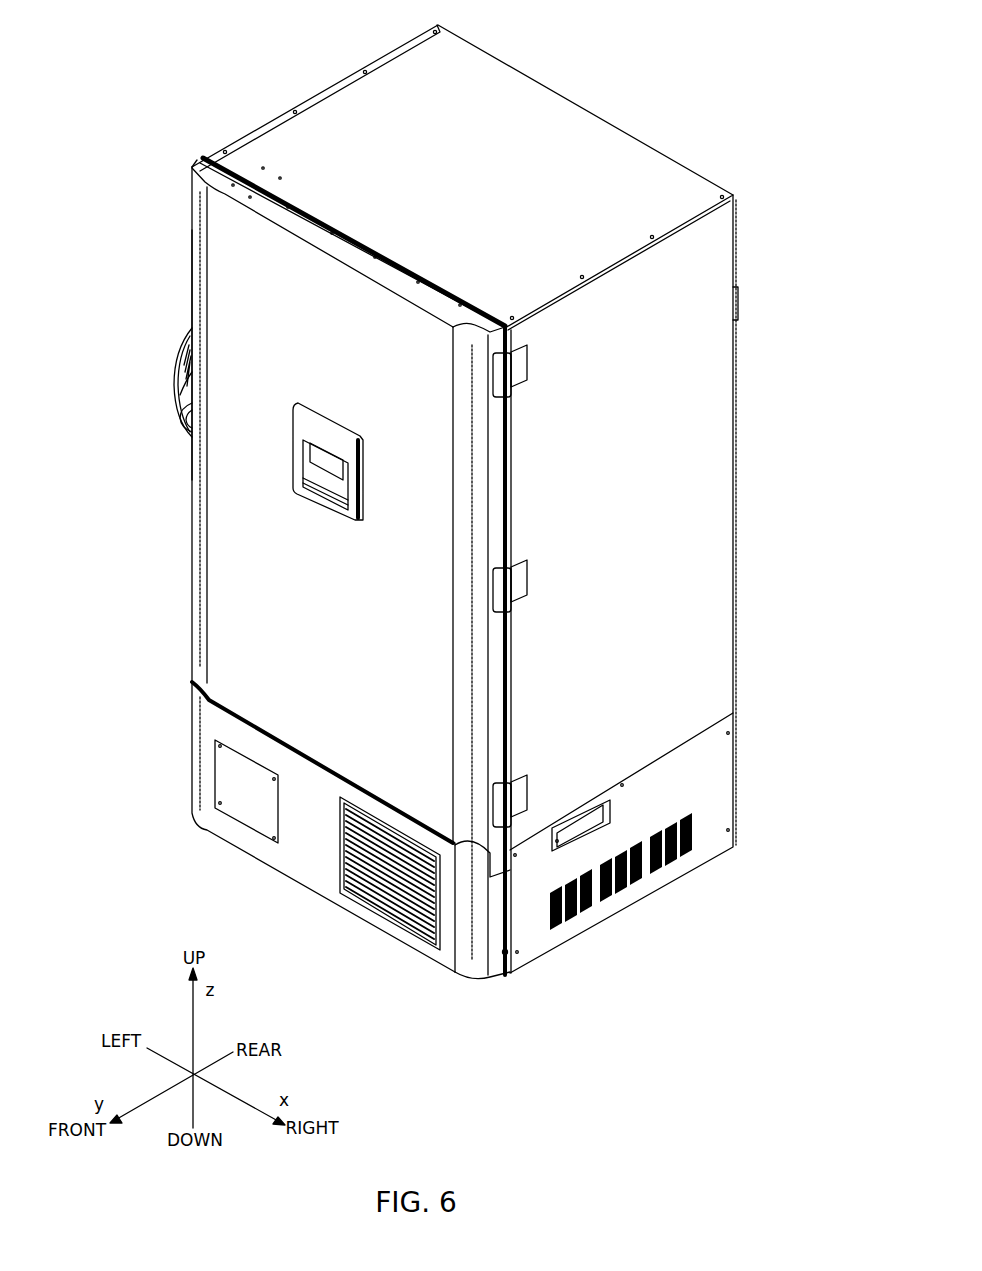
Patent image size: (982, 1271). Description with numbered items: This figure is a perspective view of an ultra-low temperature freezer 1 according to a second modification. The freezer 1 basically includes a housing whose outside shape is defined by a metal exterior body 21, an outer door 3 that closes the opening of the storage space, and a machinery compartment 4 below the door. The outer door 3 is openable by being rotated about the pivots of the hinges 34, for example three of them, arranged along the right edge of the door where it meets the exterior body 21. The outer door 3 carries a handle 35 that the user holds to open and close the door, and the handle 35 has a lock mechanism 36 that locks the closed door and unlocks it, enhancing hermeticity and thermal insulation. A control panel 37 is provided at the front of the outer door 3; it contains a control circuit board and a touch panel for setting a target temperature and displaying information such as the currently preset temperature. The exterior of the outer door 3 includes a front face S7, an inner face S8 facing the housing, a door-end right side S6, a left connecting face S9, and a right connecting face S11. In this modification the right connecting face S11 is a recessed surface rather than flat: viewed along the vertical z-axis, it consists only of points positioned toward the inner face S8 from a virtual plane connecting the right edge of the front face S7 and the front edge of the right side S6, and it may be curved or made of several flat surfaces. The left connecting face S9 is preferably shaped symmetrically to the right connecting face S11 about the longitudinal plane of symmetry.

The ultra-low temperature freezer 1 is at (98, 47).
The outer door 3 is at (177, 615).
The machinery compartment 4 is at (178, 768).
The exterior body 21 is at (727, 363).
The hinge 34 is at (527, 348).
The handle 35 is at (178, 360).
The lock mechanism 36 is at (174, 415).
The control panel 37 is at (300, 500).
The door-end right side S6 is at (497, 543).
The front face S7 is at (392, 355).
The inner face S8 is at (470, 307).
The left connecting face S9 is at (195, 232).
The right connecting face S11 is at (477, 507).